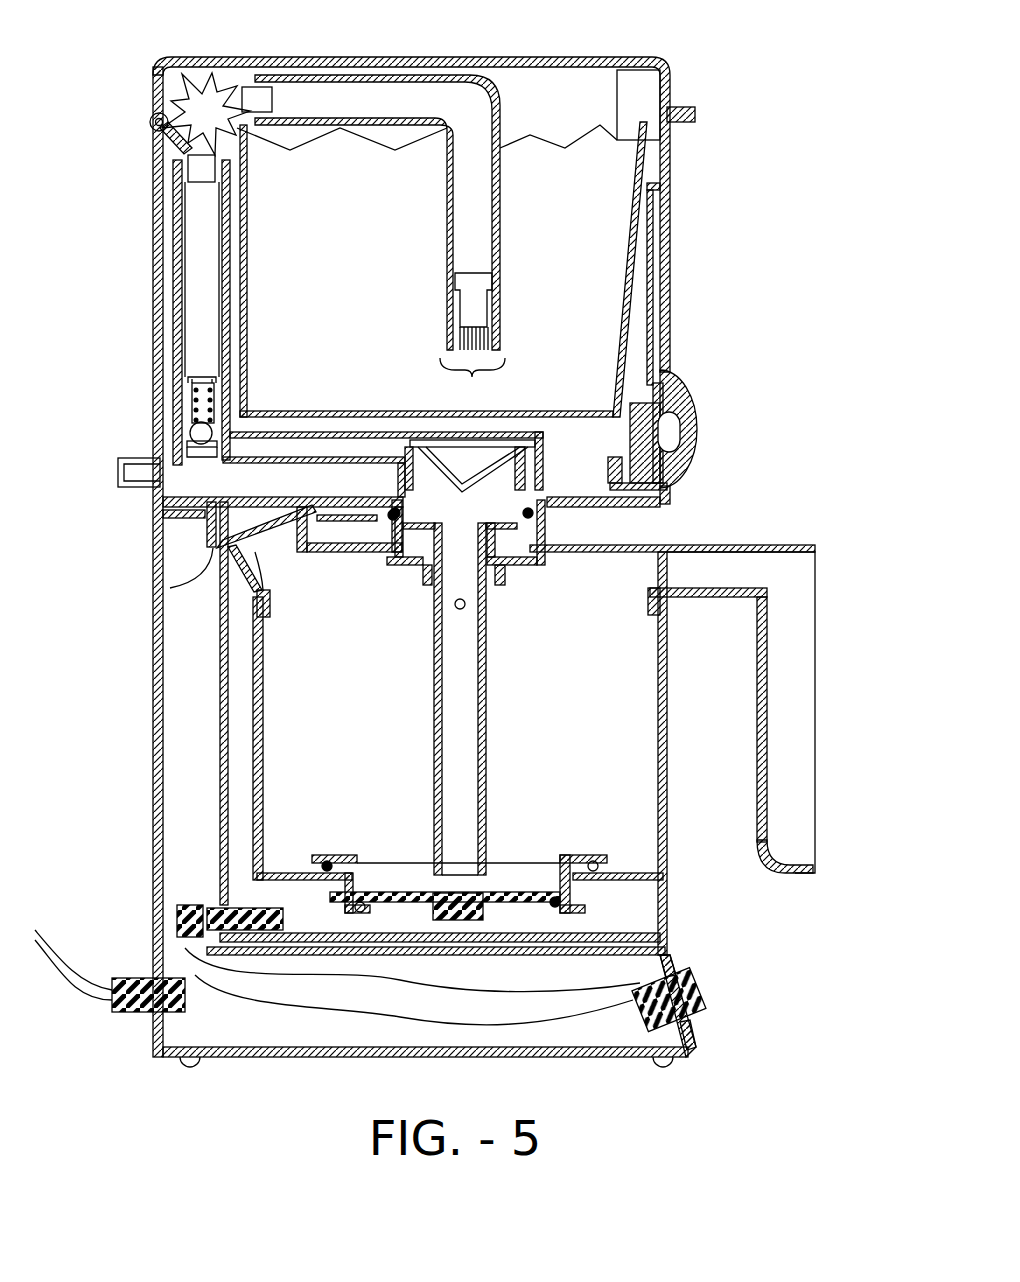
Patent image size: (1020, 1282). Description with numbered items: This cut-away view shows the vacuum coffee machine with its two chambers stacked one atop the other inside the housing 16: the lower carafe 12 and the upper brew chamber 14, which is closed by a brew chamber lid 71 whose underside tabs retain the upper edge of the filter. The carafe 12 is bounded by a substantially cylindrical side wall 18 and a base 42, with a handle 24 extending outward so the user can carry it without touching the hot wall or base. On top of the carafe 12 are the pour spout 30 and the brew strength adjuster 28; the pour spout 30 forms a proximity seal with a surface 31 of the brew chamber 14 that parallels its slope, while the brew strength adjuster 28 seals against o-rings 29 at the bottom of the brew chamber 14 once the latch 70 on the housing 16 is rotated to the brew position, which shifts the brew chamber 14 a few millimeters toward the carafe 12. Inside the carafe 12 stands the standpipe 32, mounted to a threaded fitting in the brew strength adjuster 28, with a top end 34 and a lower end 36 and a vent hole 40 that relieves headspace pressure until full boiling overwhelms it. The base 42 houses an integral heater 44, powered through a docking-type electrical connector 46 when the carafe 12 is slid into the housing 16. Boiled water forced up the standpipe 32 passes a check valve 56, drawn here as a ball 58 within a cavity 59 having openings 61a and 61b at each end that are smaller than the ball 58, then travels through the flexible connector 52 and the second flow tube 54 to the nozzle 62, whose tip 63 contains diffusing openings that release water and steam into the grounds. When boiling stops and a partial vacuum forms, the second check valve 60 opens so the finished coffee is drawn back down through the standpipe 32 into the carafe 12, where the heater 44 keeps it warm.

The carafe 12 is at (694, 763).
The brew chamber 14 is at (692, 214).
The housing 16 is at (157, 798).
The side wall 18 is at (788, 908).
The handle 24 is at (803, 594).
The brew strength adjuster 28 is at (492, 535).
The o-rings 29 is at (513, 503).
The pour spout 30 is at (257, 585).
The surface 31 is at (212, 550).
The standpipe 32 is at (487, 742).
The top end 34 is at (507, 560).
The lower end 36 is at (440, 877).
The vent hole 40 is at (456, 608).
The base 42 is at (696, 940).
The heater 44 is at (513, 891).
The electrical connector 46 is at (190, 890).
The flexible connector 52 is at (207, 88).
The second flow tube 54 is at (352, 78).
The check valve 56 is at (205, 358).
The ball 58 is at (200, 432).
The cavity 59 is at (195, 392).
The check valve 60 is at (497, 483).
The opening 61a is at (202, 457).
The opening 61b is at (203, 378).
The nozzle 62 is at (447, 312).
The tip 63 is at (472, 363).
The latch 70 is at (722, 431).
The brew chamber lid 71 is at (620, 58).